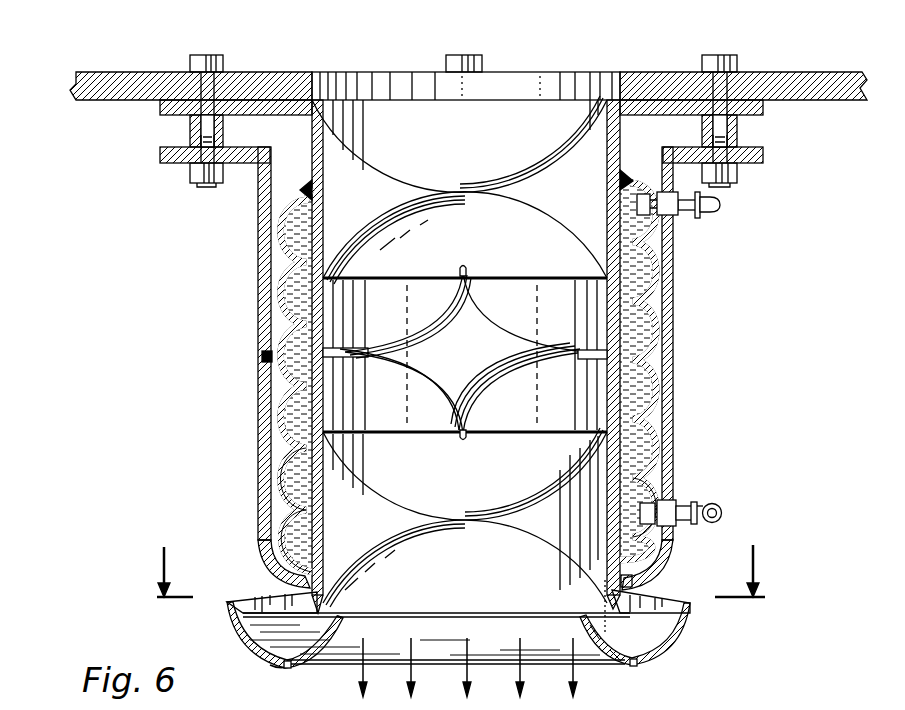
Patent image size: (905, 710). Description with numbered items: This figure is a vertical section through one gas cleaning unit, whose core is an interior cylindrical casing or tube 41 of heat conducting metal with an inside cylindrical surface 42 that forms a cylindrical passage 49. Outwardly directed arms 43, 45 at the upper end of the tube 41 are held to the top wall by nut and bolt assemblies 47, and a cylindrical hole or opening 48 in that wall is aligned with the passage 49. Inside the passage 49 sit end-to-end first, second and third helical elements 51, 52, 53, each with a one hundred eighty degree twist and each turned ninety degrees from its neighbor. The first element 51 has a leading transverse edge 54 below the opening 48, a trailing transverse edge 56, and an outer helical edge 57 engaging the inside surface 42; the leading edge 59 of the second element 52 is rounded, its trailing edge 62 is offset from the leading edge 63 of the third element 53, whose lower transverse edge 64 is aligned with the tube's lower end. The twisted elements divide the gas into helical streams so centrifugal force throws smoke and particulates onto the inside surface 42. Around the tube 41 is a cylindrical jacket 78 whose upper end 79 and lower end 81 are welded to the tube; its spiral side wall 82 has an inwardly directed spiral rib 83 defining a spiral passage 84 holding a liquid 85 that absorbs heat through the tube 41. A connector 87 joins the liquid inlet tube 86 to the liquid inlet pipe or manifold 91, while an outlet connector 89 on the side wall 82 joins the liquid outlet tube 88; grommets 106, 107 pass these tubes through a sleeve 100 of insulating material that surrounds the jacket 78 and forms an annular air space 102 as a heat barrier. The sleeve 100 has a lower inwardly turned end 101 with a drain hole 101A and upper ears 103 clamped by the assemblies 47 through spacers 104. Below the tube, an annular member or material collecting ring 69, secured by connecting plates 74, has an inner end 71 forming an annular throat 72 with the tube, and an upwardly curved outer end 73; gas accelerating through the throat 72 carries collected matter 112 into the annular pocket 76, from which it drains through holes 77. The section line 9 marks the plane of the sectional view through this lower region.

The section line 9- 9 is at (473, 565).
The interior cylindrical casing or tube 41 is at (622, 125).
The inside cylindrical surface 42 is at (607, 311).
The outwardly directed arm 43 is at (160, 112).
The outwardly directed arm 45 is at (764, 108).
The nut and bolt assembly 47 is at (203, 53).
The cylindrical hole or opening 48 is at (548, 97).
The cylindrical passage 49 is at (376, 186).
The first helical element 51 is at (465, 135).
The second helical element 52 is at (460, 352).
The third helical element 53 is at (465, 512).
The leading transverse edge 54 is at (370, 99).
The trailing transverse edge 56 is at (537, 277).
The outer helical edge 57 is at (554, 168).
The leading edge 59 is at (465, 267).
The trailing edge 62 is at (468, 438).
The leading edge 63 is at (560, 431).
The lower transverse edge 64 is at (503, 614).
The annular member or material collecting ring 69 is at (258, 661).
The inner end 71 is at (348, 622).
The annular throat 72 is at (337, 609).
The outer end 73 is at (240, 633).
The connecting member or plate 74 is at (253, 603).
The annular pocket or recess 76 is at (648, 637).
The hole 77 is at (290, 664).
The cylindrical jacket 78 is at (262, 356).
The upper end 79 is at (289, 195).
The lower end 81 is at (279, 548).
The spiral or helical-shaped side wall 82 is at (282, 288).
The inwardly directed spiral rib 83 is at (316, 323).
The spiral passage 84 is at (641, 268).
The liquid 85 is at (285, 472).
The liquid inlet tube 86 is at (684, 511).
The connector 87 is at (651, 507).
The liquid outlet tube 88 is at (703, 214).
The outlet connector 89 is at (624, 188).
The liquid inlet pipe or manifold 91 is at (723, 509).
The sleeve 100 is at (673, 341).
The lower inwardly turned end 101 is at (661, 560).
The drain hole 101A is at (633, 579).
The annular air space 102 is at (651, 300).
The outwardly directed flange or ear 103 is at (170, 163).
The spacer 104 is at (225, 132).
The grommet 106 is at (677, 523).
The grommet 107 is at (680, 216).
The collected matter 112 is at (603, 604).